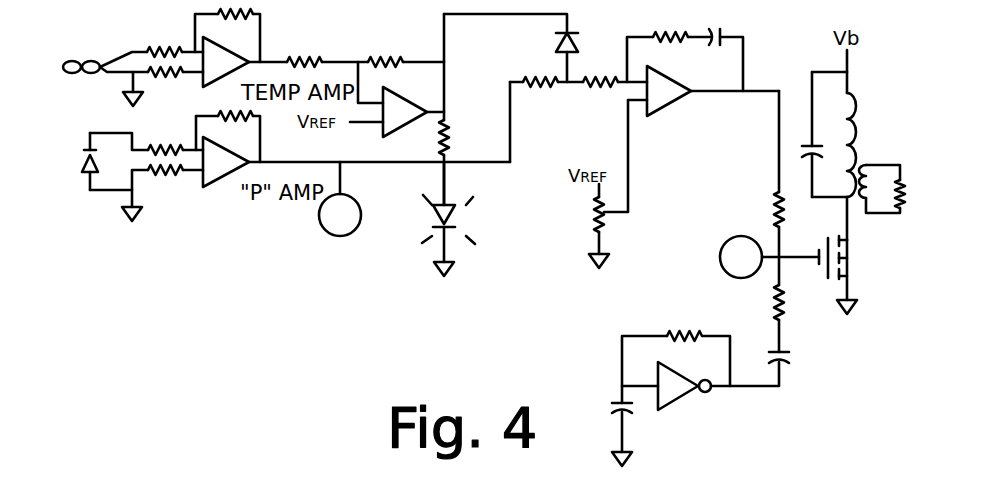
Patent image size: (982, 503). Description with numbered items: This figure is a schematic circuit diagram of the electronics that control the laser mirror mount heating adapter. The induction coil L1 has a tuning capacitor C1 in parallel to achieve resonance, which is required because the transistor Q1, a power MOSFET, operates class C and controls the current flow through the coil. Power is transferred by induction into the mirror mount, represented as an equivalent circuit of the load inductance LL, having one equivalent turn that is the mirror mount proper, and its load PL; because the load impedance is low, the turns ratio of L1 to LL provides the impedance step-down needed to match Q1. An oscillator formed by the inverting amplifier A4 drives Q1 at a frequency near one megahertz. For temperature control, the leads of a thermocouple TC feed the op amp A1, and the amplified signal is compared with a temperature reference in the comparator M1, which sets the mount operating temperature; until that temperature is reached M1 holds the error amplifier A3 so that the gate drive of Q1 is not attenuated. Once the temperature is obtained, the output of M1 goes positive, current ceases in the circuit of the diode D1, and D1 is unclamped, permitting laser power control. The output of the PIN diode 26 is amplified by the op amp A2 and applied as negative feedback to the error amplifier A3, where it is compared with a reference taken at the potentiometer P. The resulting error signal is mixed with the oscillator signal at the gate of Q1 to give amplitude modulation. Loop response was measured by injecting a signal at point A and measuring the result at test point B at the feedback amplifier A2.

The PIN diode 26 is at (82, 172).
The thermocouple TC is at (84, 56).
The op amp A1 is at (226, 62).
The op amp A2 is at (226, 162).
The error amplifier A3 is at (669, 91).
The inverting amplifier A4 is at (684, 386).
The comparator M1 is at (405, 112).
The diode D1 is at (555, 43).
The transistor Q1 is at (850, 268).
The tuning capacitor C1 is at (805, 134).
The coil L1 is at (862, 140).
The equivalent inductance of the mirror mount LL is at (872, 169).
The load PL is at (911, 194).
The potentiometer P is at (595, 212).
The test point A is at (741, 257).
The test point B is at (340, 199).